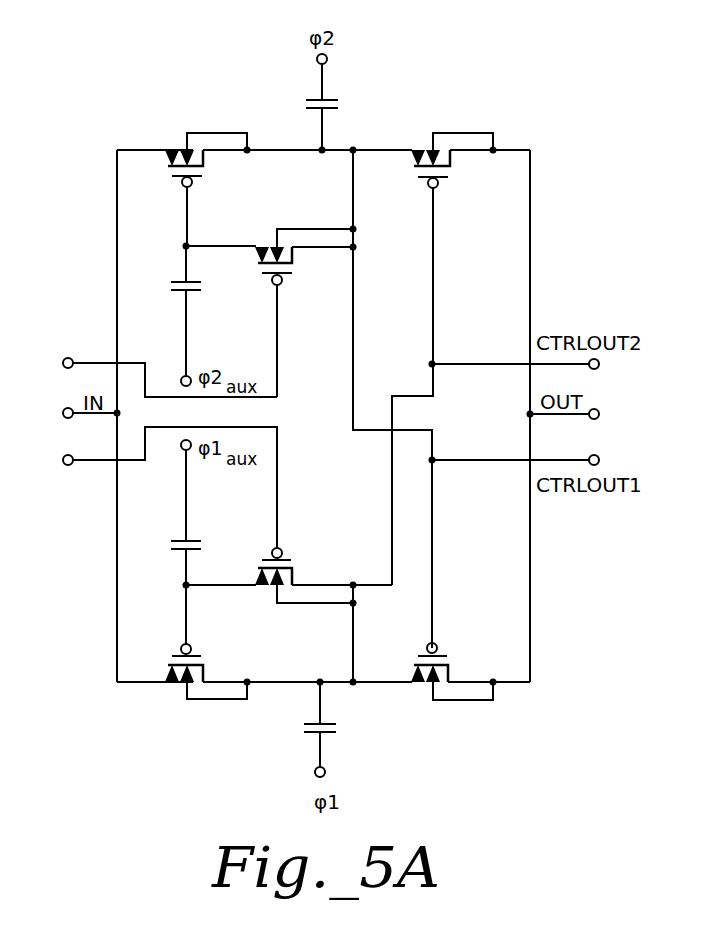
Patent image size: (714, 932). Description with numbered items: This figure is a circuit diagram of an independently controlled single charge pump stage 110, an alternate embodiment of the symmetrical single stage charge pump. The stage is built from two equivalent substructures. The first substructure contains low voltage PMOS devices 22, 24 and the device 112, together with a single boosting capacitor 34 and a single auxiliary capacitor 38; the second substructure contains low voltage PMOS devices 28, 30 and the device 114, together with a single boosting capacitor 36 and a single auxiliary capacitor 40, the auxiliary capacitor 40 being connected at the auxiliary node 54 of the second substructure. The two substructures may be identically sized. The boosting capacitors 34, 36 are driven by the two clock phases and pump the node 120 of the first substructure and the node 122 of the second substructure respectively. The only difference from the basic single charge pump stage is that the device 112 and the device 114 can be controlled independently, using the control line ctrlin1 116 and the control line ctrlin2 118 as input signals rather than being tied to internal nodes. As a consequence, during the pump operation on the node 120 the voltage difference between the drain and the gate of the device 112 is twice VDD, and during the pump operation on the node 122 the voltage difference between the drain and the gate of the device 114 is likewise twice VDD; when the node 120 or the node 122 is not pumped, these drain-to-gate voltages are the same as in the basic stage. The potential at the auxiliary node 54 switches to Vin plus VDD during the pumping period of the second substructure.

The low voltage PMOS device 22 is at (178, 688).
The low voltage PMOS device 24 is at (423, 690).
The low voltage PMOS device 28 is at (181, 135).
The low voltage PMOS device 30 is at (425, 142).
The boosting capacitor 34 is at (338, 727).
The boosting capacitor 36 is at (329, 96).
The auxiliary capacitor 38 is at (175, 557).
The auxiliary capacitor 40 is at (172, 295).
The auxiliary node 54 is at (188, 243).
The independently controlled single charge pump stage 110 is at (158, 778).
The device 112 is at (283, 556).
The device 114 is at (274, 246).
The control line ctrlin1 116 is at (92, 463).
The control line ctrlin2 118 is at (82, 369).
The node 120 is at (355, 679).
The node 122 is at (356, 153).